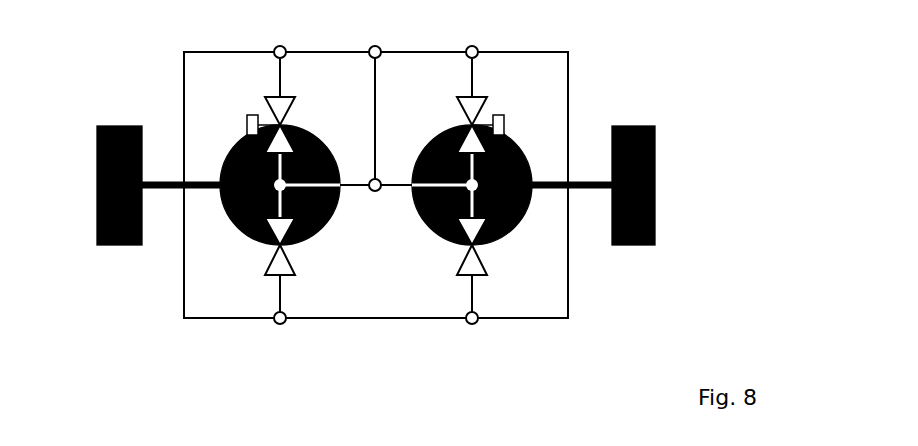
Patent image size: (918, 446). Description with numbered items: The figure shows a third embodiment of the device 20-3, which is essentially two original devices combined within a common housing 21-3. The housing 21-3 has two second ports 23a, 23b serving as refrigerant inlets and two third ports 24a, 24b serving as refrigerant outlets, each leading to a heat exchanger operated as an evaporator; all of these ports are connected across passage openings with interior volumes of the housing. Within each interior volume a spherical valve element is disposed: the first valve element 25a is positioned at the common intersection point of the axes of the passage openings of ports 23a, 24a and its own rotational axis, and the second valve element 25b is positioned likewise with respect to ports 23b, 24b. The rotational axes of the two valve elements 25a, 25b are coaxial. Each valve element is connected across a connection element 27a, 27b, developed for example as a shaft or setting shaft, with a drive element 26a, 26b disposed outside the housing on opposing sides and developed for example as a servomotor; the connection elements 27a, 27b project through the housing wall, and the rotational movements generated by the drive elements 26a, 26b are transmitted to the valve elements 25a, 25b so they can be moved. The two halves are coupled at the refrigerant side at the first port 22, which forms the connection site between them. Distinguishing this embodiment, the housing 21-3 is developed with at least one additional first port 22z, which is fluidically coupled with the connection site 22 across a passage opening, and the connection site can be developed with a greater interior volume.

The device 20-3 is at (755, 68).
The housing 21-3 is at (203, 88).
The first port 22 is at (378, 191).
The additional first port 22z is at (380, 47).
The second port 23a is at (275, 323).
The second port 23b is at (467, 323).
The third port 24a is at (285, 47).
The third port 24b is at (477, 47).
The first valve element 25a is at (235, 228).
The second valve element 25b is at (517, 222).
The drive element 26a is at (97, 128).
The drive element 26b is at (655, 222).
The connection element 27a is at (171, 182).
The connection element 27b is at (578, 182).